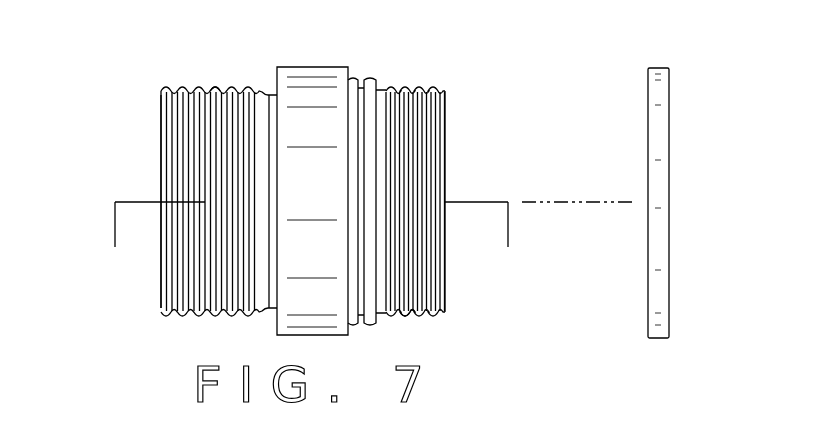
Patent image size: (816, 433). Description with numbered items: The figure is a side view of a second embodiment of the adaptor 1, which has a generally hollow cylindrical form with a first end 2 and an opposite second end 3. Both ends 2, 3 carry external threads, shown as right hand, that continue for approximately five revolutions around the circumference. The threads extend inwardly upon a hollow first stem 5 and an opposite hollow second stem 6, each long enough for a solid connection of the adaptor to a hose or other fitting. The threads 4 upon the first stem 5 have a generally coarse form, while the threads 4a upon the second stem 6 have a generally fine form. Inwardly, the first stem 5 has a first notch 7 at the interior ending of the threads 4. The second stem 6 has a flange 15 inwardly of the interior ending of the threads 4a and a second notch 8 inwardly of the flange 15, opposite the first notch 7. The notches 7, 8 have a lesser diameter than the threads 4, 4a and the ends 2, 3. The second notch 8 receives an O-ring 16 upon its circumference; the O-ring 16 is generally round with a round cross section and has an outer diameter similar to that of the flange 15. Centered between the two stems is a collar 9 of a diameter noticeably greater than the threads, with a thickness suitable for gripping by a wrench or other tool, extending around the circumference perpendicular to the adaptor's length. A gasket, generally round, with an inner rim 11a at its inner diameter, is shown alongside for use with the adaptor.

The adaptor 1 is at (132, 109).
The first end 2 is at (160, 178).
The second end 3 is at (447, 160).
The threads 4 is at (180, 86).
The threads 4a is at (415, 320).
The first stem 5 is at (214, 62).
The second stem 6 is at (420, 88).
The first notch 7 is at (264, 95).
The second notch 8 is at (370, 245).
The collar 9 is at (298, 70).
The flange 15 is at (370, 79).
The O-ring 16 is at (352, 79).
The inner rim 11a is at (669, 97).